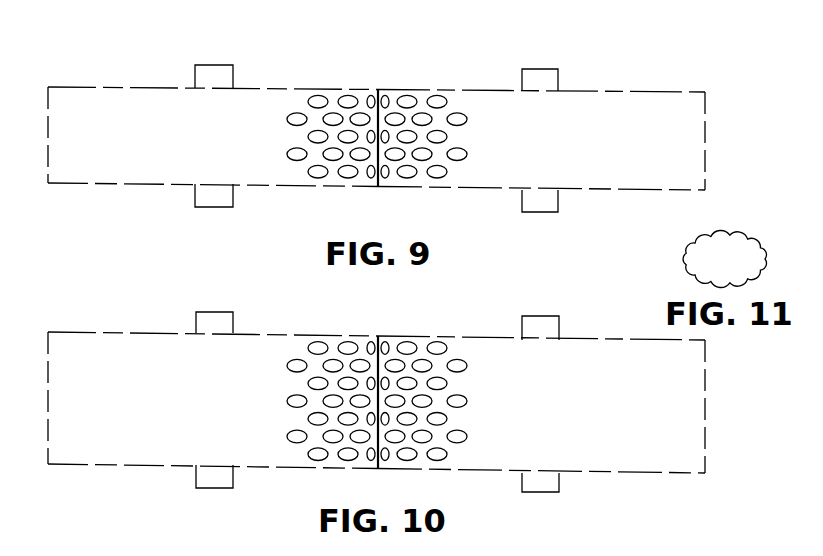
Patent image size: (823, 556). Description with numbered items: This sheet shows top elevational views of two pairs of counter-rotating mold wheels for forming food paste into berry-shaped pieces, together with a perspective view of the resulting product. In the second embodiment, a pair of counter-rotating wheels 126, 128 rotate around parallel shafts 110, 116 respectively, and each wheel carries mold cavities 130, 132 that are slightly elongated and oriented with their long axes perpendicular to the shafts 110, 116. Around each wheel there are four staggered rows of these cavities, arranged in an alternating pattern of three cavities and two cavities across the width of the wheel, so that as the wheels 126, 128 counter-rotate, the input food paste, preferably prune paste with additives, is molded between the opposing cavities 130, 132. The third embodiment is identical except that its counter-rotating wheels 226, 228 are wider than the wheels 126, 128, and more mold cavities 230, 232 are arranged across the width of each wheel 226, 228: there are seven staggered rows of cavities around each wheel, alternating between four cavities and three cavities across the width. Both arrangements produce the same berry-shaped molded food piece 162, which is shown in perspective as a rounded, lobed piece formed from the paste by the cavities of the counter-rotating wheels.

In FIG. 9, the shaft 110 is at (228, 68).
In FIG. 9, the shaft 116 is at (543, 70).
In FIG. 9, the counter-rotating wheel 126 is at (148, 84).
In FIG. 9, the counter-rotating wheel 128 is at (625, 92).
In FIG. 9, the mold cavity 130 is at (348, 92).
In FIG. 9, the mold cavity 132 is at (437, 92).
In FIG. 11, the berry-shaped molded food piece 162 is at (700, 256).
In FIG. 10, the counter-rotating wheel 226 is at (178, 332).
In FIG. 10, the counter-rotating wheel 228 is at (477, 335).
In FIG. 10, the mold cavity 230 is at (347, 343).
In FIG. 10, the mold cavity 232 is at (432, 340).